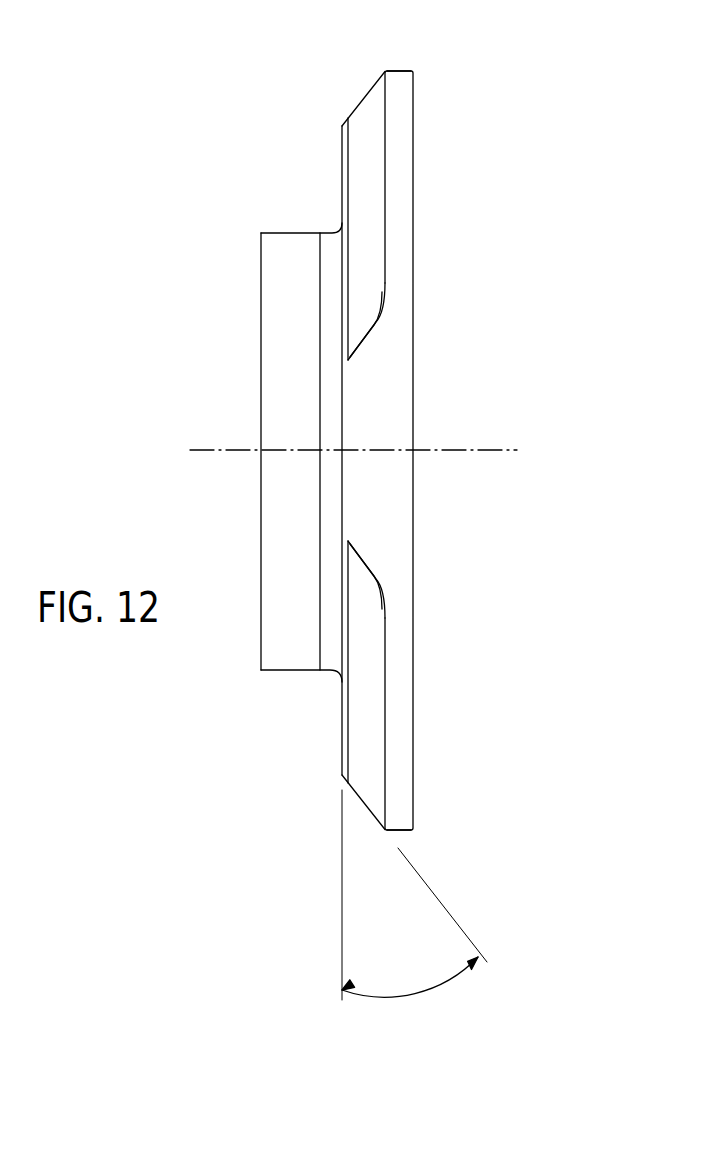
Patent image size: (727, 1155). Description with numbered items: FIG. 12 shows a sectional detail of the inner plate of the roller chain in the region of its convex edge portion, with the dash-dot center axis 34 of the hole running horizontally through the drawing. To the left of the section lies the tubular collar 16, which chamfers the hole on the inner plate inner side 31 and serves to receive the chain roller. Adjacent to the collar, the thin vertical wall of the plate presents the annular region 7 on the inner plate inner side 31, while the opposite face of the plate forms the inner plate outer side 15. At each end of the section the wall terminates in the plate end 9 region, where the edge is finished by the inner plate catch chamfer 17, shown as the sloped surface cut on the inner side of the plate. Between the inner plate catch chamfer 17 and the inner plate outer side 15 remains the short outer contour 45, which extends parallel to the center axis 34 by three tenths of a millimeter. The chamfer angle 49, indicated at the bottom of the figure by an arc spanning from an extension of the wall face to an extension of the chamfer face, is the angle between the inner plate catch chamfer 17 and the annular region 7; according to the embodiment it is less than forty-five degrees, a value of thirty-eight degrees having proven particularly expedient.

The annular region 7 is at (343, 170).
The plate end 9 is at (393, 385).
The inner plate outer side 15 is at (377, 441).
The tubular collar 16 is at (283, 397).
The inner plate catch chamfer 17 is at (368, 117).
The inner plate inner side 31 is at (310, 119).
The center axis 34 is at (495, 453).
The outer contour 45 is at (398, 70).
The chamfer angle 49 is at (420, 993).